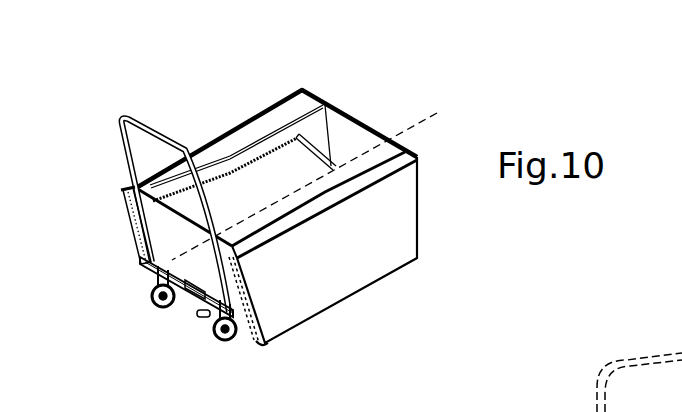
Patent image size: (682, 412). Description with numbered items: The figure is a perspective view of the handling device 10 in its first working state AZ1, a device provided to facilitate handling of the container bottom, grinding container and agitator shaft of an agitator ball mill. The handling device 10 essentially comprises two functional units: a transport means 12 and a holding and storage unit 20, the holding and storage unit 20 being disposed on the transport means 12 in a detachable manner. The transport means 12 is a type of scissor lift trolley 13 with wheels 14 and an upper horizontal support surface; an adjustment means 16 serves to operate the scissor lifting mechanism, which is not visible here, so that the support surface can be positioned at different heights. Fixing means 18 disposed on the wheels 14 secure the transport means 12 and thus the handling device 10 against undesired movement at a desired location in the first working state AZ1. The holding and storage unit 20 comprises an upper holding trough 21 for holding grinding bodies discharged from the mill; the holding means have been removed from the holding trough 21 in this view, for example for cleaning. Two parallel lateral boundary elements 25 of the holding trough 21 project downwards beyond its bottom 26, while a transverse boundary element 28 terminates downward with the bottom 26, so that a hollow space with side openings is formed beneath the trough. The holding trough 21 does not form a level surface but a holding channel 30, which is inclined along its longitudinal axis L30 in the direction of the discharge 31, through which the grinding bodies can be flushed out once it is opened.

The handling device 10 is at (267, 234).
The first working state AZ1 is at (267, 234).
The transport means 12 is at (139, 190).
The scissor lift trolley 13 is at (105, 116).
The wheels 14 is at (232, 334).
The adjustment means 16 is at (135, 236).
The fixing means 18 is at (203, 313).
The holding and storage unit 20 is at (298, 188).
The holding trough 21 is at (240, 113).
The bottom 26 is at (277, 145).
The lateral boundary elements 25 is at (403, 212).
The transverse boundary element 28 is at (163, 212).
The holding channel 30 is at (238, 218).
The discharge 31 is at (322, 172).
The longitudinal axis L30 is at (352, 89).